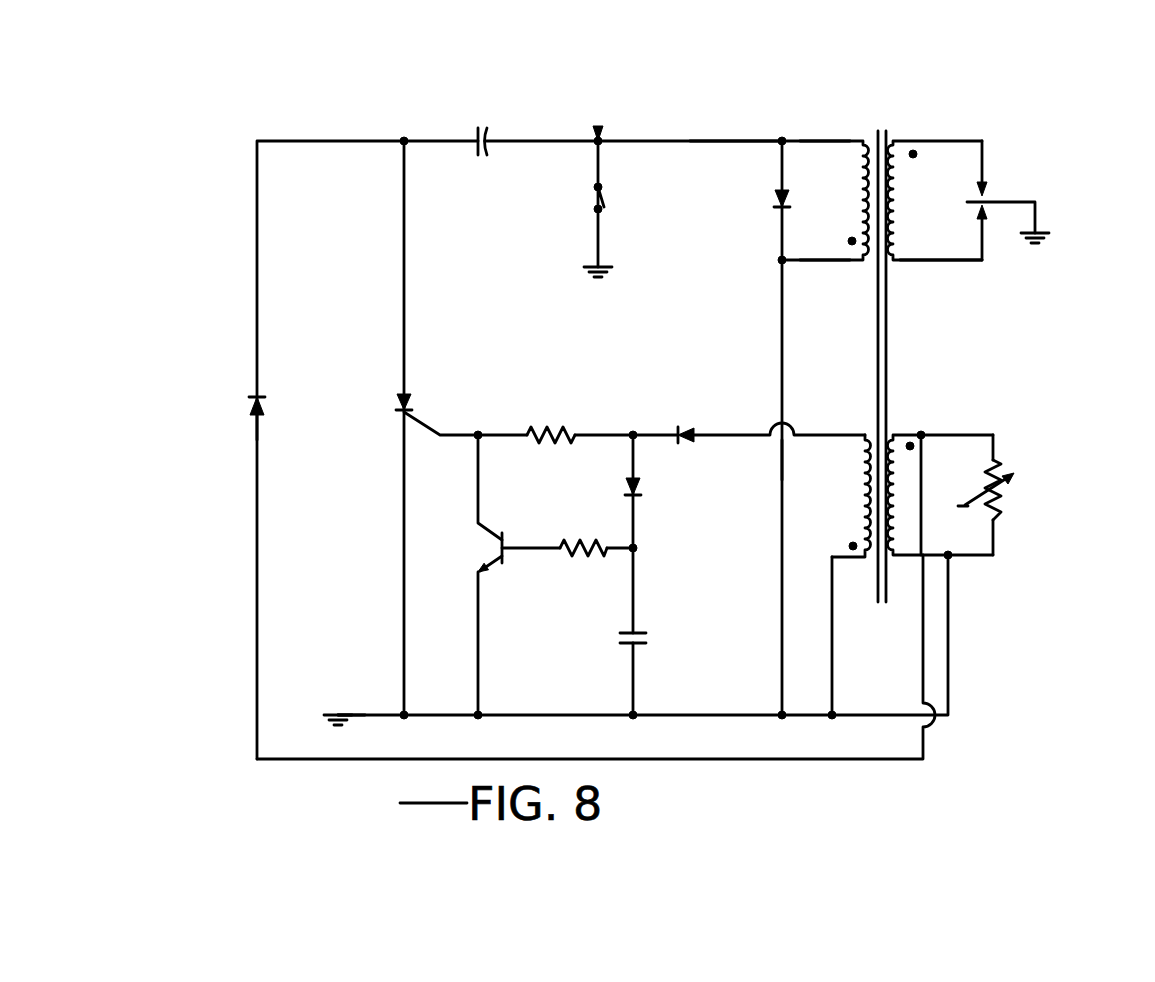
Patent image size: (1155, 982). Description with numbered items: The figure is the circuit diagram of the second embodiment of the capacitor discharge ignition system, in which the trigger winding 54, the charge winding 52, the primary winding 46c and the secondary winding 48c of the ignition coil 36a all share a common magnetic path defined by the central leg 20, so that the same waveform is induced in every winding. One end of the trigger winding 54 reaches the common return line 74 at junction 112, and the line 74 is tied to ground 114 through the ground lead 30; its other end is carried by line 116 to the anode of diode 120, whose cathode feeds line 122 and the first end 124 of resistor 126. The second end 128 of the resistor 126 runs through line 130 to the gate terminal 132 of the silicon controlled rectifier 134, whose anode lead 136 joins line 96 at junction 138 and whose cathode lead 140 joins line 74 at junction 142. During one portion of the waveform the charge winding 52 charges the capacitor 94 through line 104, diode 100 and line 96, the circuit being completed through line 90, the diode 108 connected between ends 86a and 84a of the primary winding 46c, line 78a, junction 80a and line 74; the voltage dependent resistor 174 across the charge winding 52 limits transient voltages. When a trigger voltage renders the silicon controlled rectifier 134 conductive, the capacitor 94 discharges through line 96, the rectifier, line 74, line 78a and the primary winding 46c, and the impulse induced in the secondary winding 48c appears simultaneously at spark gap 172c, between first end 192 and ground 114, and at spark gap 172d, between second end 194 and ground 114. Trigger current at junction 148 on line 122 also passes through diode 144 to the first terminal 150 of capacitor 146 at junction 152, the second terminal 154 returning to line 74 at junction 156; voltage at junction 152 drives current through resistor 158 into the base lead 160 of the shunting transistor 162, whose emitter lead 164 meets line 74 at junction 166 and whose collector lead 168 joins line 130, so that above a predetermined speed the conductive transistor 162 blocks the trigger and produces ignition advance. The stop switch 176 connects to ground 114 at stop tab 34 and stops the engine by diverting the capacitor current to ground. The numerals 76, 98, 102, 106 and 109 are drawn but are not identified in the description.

The central leg 20 is at (886, 132).
The ground lead 30 is at (365, 714).
The stop tab 34 is at (598, 127).
The ignition coil 36a is at (994, 140).
The primary winding 46c is at (872, 155).
The secondary winding 48c is at (897, 184).
The charge winding 52 is at (902, 490).
The trigger winding 54 is at (859, 490).
The line 74 is at (440, 716).
The junction 76 is at (990, 560).
The line 78a is at (786, 479).
The junction 80a is at (782, 717).
The end of primary winding 84a is at (838, 260).
The end of primary winding 86a is at (817, 141).
The line 90 is at (700, 141).
The capacitor 94 is at (488, 140).
The line 96 is at (450, 145).
The diode cathode 98 is at (255, 393).
The diode 100 is at (250, 410).
The diode anode 102 is at (251, 423).
The line 104 is at (256, 595).
The conductor 106 is at (940, 435).
The diode 108 is at (775, 201).
The conductor 109 is at (834, 646).
The junction 112 is at (834, 712).
The ground 114 is at (608, 269).
The line 116 is at (750, 437).
The diode 120 is at (692, 428).
The line 122 is at (655, 432).
The first end of resistor 124 is at (575, 432).
The resistor 126 is at (552, 432).
The second end of resistor 128 is at (528, 432).
The line 130 is at (462, 434).
The gate terminal 132 is at (432, 421).
The silicon controlled rectifier 134 is at (410, 399).
The anode lead 136 is at (403, 335).
The junction 138 is at (405, 139).
The cathode lead 140 is at (403, 500).
The junction 142 is at (406, 713).
The diode 144 is at (642, 490).
The capacitor 146 is at (645, 634).
The junction 148 is at (633, 432).
The first terminal of capacitor 150 is at (645, 589).
The junction 152 is at (645, 549).
The second terminal of capacitor 154 is at (645, 643).
The junction 156 is at (645, 713).
The resistor 158 is at (585, 556).
The base lead 160 is at (510, 546).
The transistor 162 is at (495, 530).
The emitter lead 164 is at (480, 590).
The junction 166 is at (480, 712).
The collector lead 168 is at (478, 495).
The spark plug or gap 172c is at (997, 190).
The spark plug or gap 172d is at (994, 213).
The voltage dependent resistor 174 is at (1003, 470).
The stop switch 176 is at (604, 198).
The first end of secondary winding 192 is at (984, 147).
The second end of secondary winding 194 is at (932, 260).